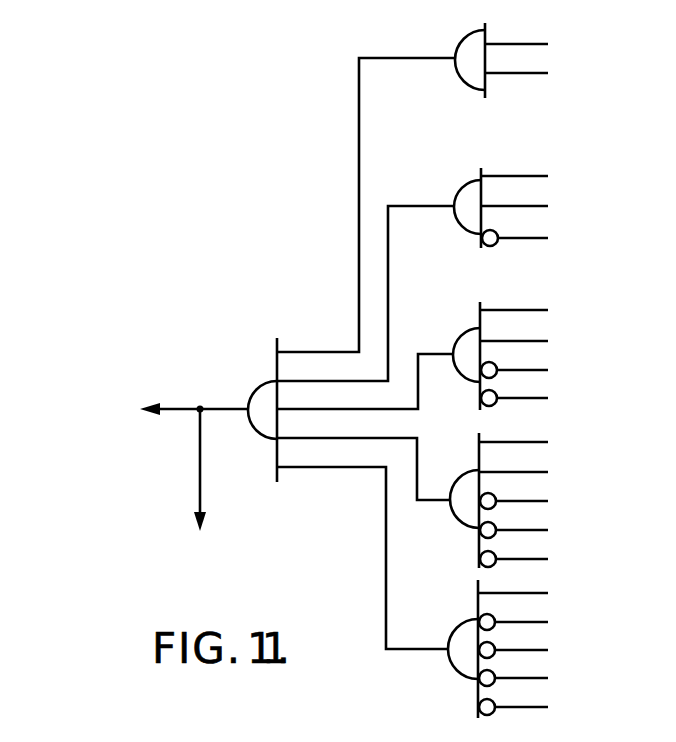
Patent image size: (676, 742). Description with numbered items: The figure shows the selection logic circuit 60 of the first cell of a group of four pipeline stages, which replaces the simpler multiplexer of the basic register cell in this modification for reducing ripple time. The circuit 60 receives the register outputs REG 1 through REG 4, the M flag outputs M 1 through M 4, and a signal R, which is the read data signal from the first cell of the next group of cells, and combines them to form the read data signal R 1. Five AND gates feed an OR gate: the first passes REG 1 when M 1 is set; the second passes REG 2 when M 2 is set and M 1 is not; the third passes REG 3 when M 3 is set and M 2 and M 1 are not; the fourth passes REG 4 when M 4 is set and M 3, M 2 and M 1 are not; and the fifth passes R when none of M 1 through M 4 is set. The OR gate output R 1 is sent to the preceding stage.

The selection logic circuit 60 is at (337, 373).
The OR gate 1 is at (264, 410).
The AND gate for REG 2 is at (543, 208).
The AND gate for REG 3 is at (542, 355).
The AND gate for REG 4 is at (538, 501).